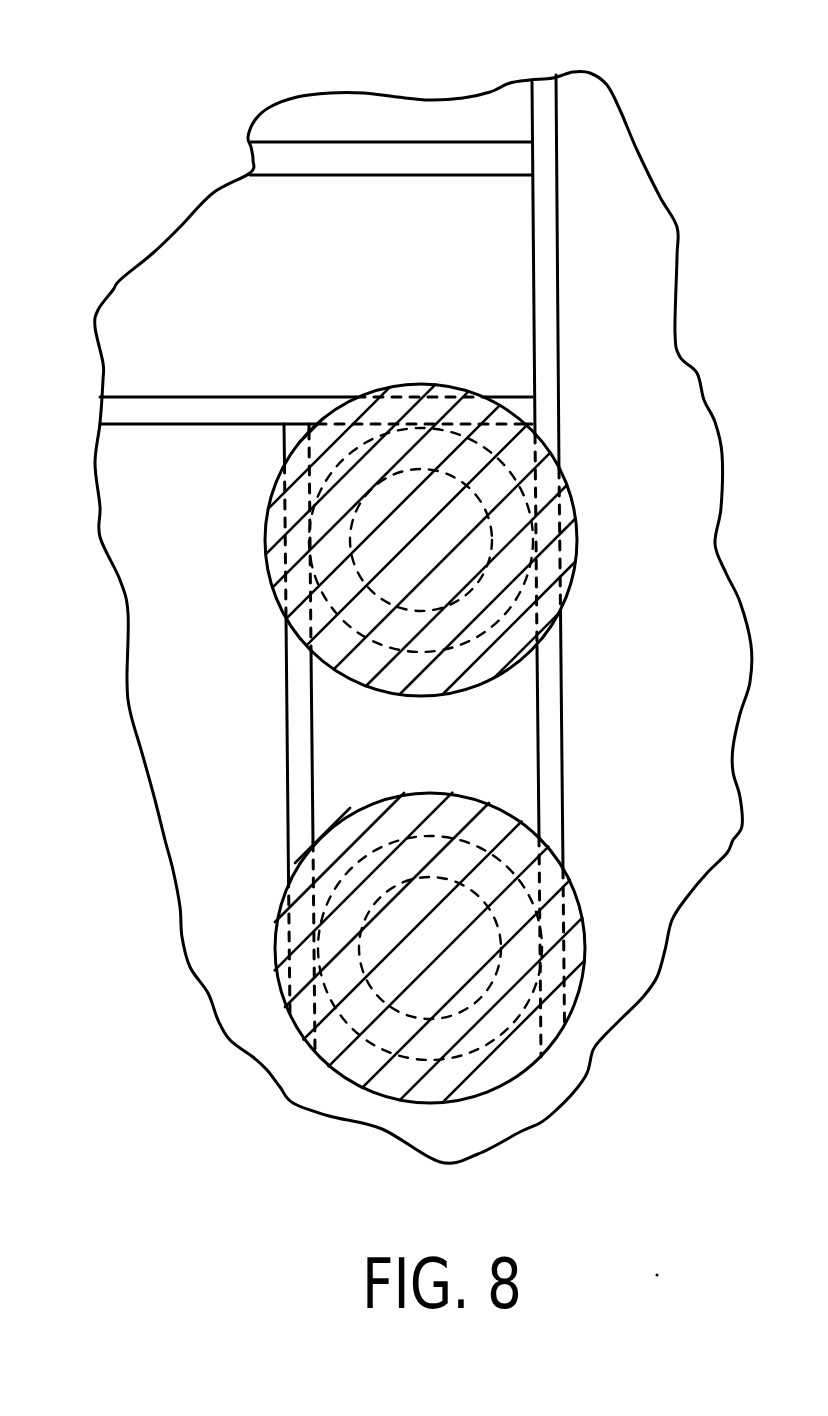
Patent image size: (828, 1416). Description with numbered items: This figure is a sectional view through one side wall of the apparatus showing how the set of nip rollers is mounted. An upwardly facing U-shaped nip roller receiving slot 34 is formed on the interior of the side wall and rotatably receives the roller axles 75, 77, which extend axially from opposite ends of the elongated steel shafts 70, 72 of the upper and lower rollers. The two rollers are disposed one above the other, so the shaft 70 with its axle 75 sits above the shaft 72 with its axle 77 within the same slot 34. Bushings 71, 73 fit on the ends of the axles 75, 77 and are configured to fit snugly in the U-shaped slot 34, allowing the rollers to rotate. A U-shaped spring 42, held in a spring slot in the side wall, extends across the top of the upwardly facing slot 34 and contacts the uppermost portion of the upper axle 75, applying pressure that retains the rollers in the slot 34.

The U-shaped nip roller receiving slot 34 is at (507, 732).
The U-shaped spring 42 is at (393, 155).
The elongated steel shaft 70 is at (571, 516).
The bushing 71 is at (340, 580).
The elongated steel shaft 72 is at (572, 945).
The bushing 73 is at (400, 847).
The axle 75 is at (403, 546).
The axle 77 is at (403, 917).